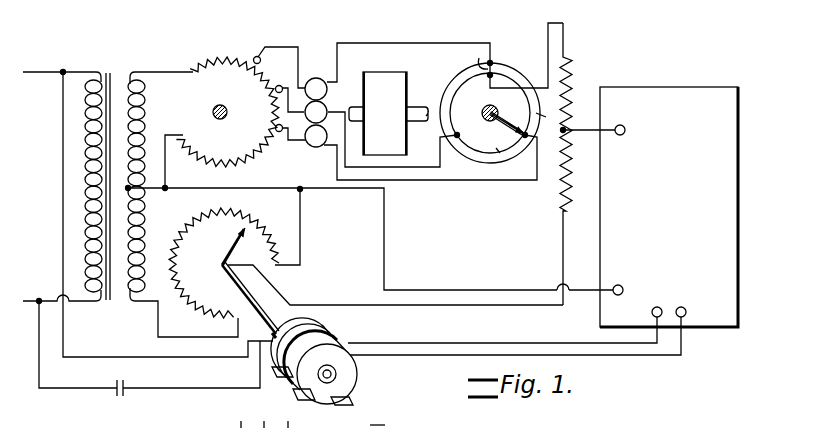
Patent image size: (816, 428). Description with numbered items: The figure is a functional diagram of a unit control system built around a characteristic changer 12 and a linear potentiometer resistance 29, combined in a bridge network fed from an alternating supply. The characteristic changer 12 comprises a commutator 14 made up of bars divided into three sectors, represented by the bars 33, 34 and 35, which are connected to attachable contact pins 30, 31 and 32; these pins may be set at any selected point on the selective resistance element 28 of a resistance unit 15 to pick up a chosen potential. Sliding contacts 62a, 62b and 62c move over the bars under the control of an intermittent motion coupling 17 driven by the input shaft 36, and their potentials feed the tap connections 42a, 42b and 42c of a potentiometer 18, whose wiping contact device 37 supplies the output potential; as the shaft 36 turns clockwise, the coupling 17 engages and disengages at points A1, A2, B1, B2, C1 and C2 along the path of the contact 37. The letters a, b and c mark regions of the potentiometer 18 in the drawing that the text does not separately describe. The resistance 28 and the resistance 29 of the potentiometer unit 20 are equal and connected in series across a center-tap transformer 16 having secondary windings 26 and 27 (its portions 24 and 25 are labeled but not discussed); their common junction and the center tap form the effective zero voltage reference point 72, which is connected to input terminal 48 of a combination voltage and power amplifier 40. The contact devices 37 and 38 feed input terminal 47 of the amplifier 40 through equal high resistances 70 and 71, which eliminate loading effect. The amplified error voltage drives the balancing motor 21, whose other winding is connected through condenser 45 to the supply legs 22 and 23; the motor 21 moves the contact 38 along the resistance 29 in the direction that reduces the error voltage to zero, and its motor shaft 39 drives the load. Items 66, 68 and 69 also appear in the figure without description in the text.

The characteristic changer 12 is at (428, 34).
The commutator 14 is at (387, 212).
The resistance unit 15 is at (337, 93).
The center-tap transformer 16 is at (130, 182).
The intermittent motion coupling 17 is at (414, 73).
The potentiometer resistance 18 is at (496, 118).
The potentiometer unit 20 is at (225, 257).
The balancing motor 21 is at (339, 329).
The A. C. voltage supply leg 22 is at (40, 71).
The A. C. voltage supply leg 23 is at (38, 300).
The primary winding 24 is at (62, 212).
The primary winding lead 25 is at (98, 307).
The secondary winding 26 is at (169, 106).
The secondary winding 27 is at (127, 296).
The selective resistance element 28 is at (228, 144).
The linear potentiometer resistance 29 is at (216, 231).
The attachable contact pin 30 is at (258, 56).
The attachable contact pin 31 is at (280, 85).
The attachable contact pin 32 is at (279, 132).
The commutator bar 33 is at (316, 79).
The commutator bar 34 is at (320, 112).
The commutator bar 35 is at (314, 148).
The input shaft 36 is at (214, 108).
The wiping contact device 37 is at (509, 130).
The output contact device 38 is at (219, 262).
The motor shaft 39 is at (240, 293).
The combination voltage and power amplifier 40 is at (722, 235).
The tap connection 42a is at (486, 67).
The tap connection 42b is at (525, 139).
The tap connection 42c is at (455, 138).
The condenser 45 is at (116, 393).
The input terminal 47 is at (626, 133).
The input terminal 48 is at (623, 288).
The sliding contact 62a is at (319, 79).
The sliding contact 62b is at (321, 116).
The sliding contact 62c is at (320, 149).
The conductor 66 is at (338, 66).
The element 68 is at (264, 416).
The element 69 is at (392, 420).
The resistance 70 is at (574, 71).
The resistance 71 is at (574, 171).
The effective zero voltage reference point 72 is at (150, 191).
The point A1 is at (517, 66).
The point A2 is at (552, 127).
The point B1 is at (498, 153).
The point B2 is at (475, 133).
The point C1 is at (463, 101).
The point C2 is at (474, 93).
The contact arc a is at (522, 73).
The contact arc b is at (483, 166).
The contact arc c is at (473, 115).